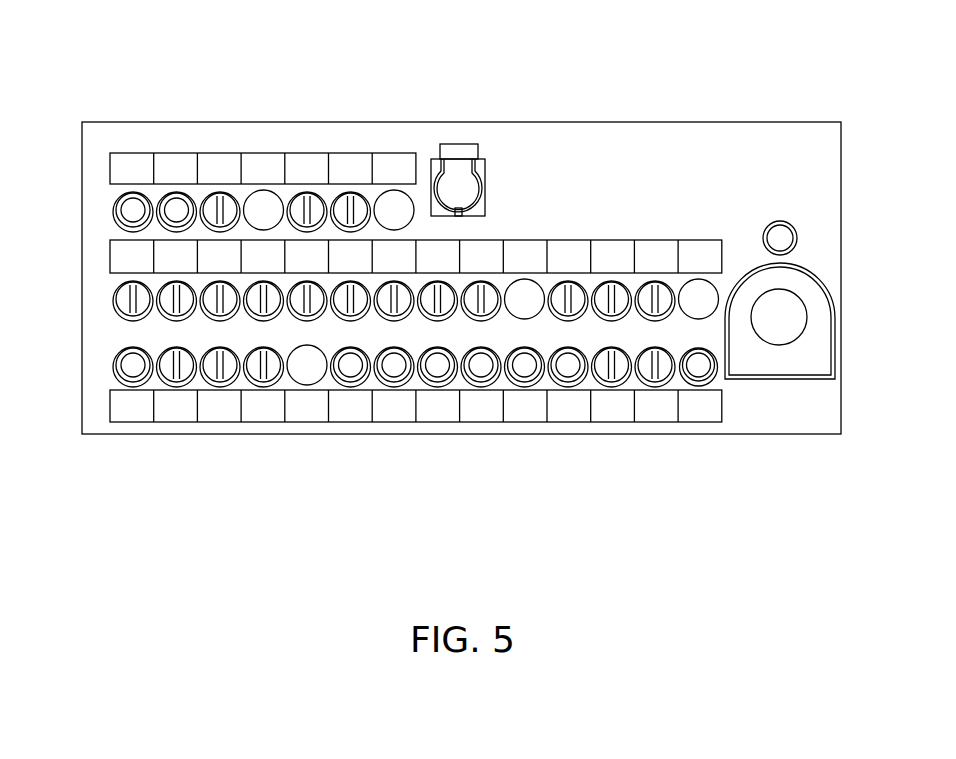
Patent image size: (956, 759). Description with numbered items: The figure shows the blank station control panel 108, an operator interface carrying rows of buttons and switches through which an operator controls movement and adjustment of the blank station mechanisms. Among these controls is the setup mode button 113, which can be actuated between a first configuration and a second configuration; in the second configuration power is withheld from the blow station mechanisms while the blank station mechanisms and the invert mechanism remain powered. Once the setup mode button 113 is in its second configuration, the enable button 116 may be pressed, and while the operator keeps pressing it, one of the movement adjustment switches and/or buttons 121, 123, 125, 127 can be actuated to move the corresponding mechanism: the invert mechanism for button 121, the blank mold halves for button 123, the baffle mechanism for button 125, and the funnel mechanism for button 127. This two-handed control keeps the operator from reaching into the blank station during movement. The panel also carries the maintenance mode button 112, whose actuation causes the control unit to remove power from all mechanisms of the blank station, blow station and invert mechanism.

The blank station control panel 108 is at (728, 143).
The setup mode button 113 is at (226, 205).
The movement adjustment switch and/or button 121 is at (312, 203).
The movement adjustment switch and/or button 127 is at (313, 298).
The movement adjustment switch and/or button 123 is at (122, 295).
The movement adjustment switch and/or button 125 is at (227, 302).
The enable button 116 is at (135, 367).
The maintenance mode button 112 is at (778, 332).